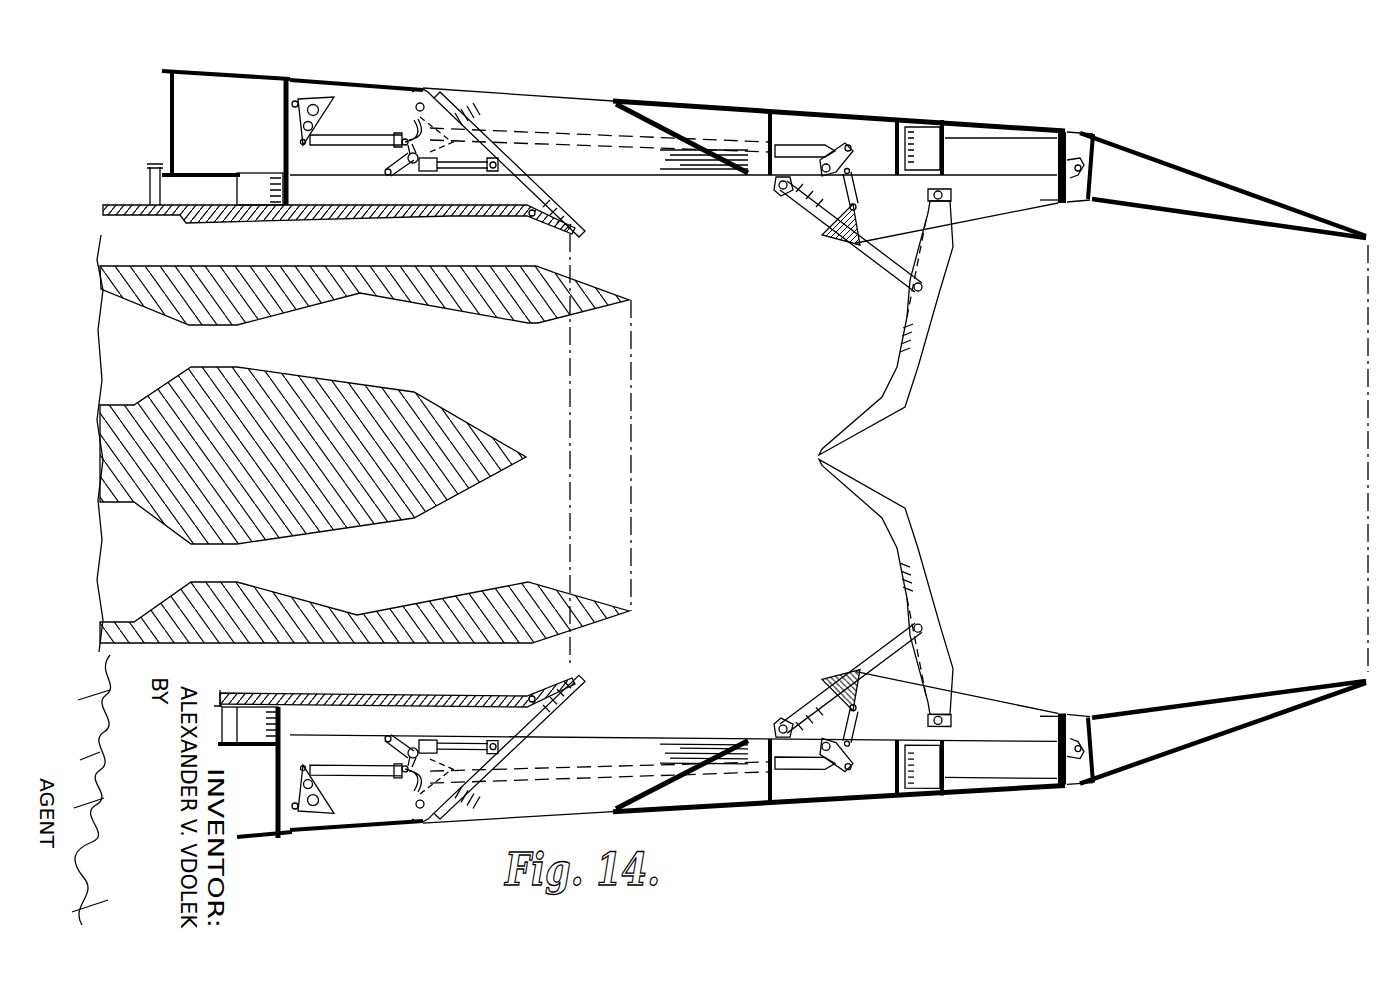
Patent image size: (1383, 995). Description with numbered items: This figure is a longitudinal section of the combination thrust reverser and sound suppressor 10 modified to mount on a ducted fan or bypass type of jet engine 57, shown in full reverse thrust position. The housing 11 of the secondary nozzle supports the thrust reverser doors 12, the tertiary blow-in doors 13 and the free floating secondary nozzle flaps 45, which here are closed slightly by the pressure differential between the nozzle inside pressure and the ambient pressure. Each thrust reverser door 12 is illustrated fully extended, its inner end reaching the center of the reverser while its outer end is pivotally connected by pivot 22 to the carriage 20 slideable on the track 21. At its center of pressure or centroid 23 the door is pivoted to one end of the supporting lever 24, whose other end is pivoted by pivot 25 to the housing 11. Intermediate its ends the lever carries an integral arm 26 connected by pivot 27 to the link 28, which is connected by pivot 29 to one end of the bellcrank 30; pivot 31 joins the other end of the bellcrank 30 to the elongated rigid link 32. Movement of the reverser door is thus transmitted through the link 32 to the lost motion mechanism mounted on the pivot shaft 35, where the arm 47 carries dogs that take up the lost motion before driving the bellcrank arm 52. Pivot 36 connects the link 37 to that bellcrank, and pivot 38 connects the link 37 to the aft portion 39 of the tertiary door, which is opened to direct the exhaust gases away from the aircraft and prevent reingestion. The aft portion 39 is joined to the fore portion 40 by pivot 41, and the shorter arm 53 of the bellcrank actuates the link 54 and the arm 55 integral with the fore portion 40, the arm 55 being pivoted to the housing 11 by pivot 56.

The combination thrust reverser and sound suppressor 10 is at (989, 452).
The housing 11 is at (838, 112).
The thrust reverser door 12 is at (902, 405).
The tertiary blow-in door 13 is at (466, 106).
The carriage 20 is at (928, 140).
The track 21 is at (1007, 147).
The pivot 22 is at (947, 197).
The centroid 23 is at (923, 288).
The supporting lever 24 is at (815, 239).
The pivot 25 is at (778, 193).
The integral arm 26 is at (846, 250).
The pivot 27 is at (858, 209).
The link 28 is at (860, 190).
The pivot 29 is at (845, 175).
The bellcrank 30 is at (853, 157).
The pivot 31 is at (849, 145).
The elongated rigid link 32 is at (790, 142).
The pivot shaft 35 is at (439, 163).
The pivot 36 is at (412, 164).
The link 37 is at (453, 170).
The pivot 38 is at (495, 172).
The aft portion of tertiary blow-in door 39 is at (572, 226).
The fore portion of tertiary blow-in door 40 is at (397, 81).
The pivot 41 is at (432, 96).
The secondary nozzle flap 45 is at (1155, 191).
The arm 47 is at (472, 128).
The bellcrank arm 52 is at (383, 176).
The shorter arm 53 is at (412, 122).
The link 54 is at (351, 146).
The arm 55 is at (330, 113).
The pivot 56 is at (290, 105).
The ducted fan or bypass type of jet engine 57 is at (282, 415).